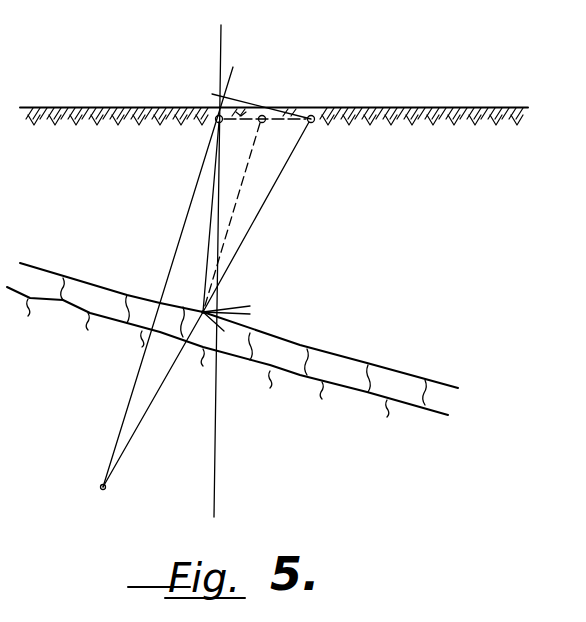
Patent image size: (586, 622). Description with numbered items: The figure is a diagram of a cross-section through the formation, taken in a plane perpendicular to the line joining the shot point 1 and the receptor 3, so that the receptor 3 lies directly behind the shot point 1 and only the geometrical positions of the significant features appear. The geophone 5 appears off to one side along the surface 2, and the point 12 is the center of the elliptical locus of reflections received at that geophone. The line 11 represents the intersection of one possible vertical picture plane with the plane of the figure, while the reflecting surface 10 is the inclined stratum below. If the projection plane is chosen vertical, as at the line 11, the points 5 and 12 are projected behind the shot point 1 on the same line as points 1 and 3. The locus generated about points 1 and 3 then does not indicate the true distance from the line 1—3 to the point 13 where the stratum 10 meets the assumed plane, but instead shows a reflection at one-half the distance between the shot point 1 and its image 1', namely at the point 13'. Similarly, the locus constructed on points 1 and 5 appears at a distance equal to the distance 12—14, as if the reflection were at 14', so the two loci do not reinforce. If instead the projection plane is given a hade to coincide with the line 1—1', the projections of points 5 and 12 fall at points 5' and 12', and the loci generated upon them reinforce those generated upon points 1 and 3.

The shot point 1 is at (220, 214).
The image of the shot point 1' is at (117, 494).
The ground surface 2 is at (430, 107).
The receptor 3 is at (216, 124).
The geophone 5 is at (209, 302).
The projection of geophone 5' is at (257, 96).
The reflecting surface 10 is at (337, 352).
The picture plane intersection line 11 is at (216, 400).
The center of elliptical locus 12 is at (242, 199).
The projection of locus center 12' is at (248, 104).
The stratum intersection point 13 is at (236, 316).
The apparent reflection point 13' is at (227, 299).
The reflection point 14 is at (205, 326).
The apparent reflection point for geophone locus 14' is at (225, 329).